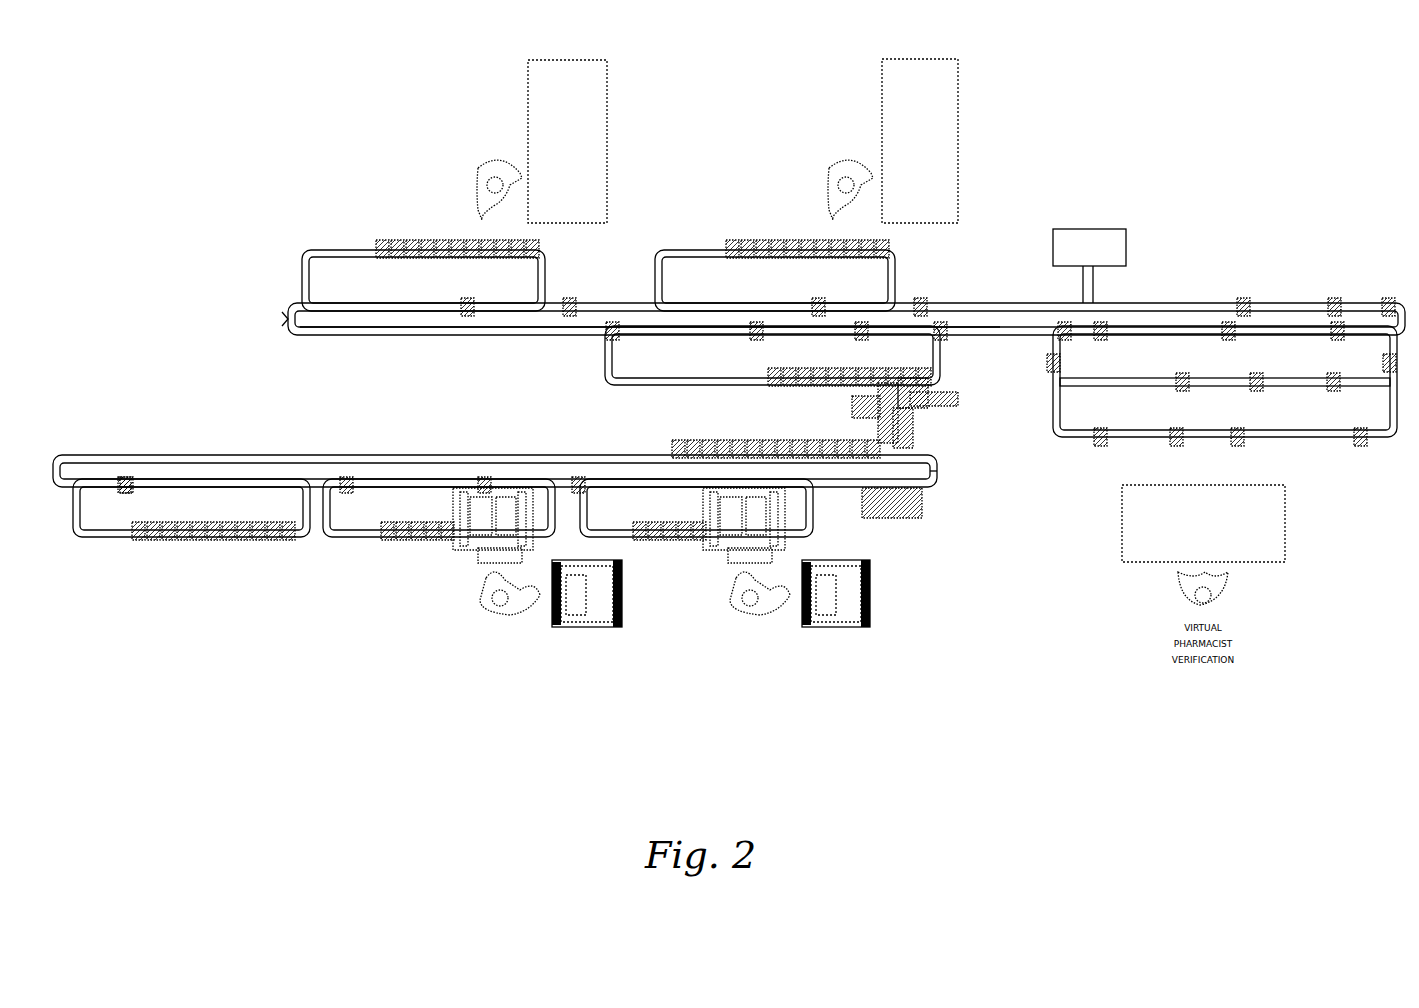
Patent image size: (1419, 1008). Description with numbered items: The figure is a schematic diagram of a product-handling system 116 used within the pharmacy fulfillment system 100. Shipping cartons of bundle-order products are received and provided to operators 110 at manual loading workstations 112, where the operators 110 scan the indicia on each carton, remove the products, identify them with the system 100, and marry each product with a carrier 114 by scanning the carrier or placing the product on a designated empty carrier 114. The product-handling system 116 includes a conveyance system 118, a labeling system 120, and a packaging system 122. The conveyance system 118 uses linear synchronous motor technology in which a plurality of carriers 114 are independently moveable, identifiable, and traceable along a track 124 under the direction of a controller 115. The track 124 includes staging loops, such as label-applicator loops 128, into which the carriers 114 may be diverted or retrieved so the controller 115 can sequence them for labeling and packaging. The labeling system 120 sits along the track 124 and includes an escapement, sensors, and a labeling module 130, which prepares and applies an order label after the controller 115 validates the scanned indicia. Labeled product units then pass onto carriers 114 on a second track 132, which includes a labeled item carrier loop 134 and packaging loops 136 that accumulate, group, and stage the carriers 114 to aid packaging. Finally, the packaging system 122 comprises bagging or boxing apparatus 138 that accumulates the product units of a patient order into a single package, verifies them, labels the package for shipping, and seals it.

The system 100 is at (268, 112).
The operators 110 is at (476, 194).
The manual loading workstations 112 is at (604, 122).
The carrier 114 is at (568, 292).
The controller 115 is at (1106, 230).
The product-handling system 116 is at (196, 266).
The conveyance system 118 is at (290, 327).
The labeling system 120 is at (948, 404).
The packaging system 122 is at (908, 550).
The track 124 is at (405, 332).
The label-applicator loops 128 is at (612, 376).
The labeling module 130 is at (856, 411).
The second track 132 is at (938, 478).
The labeled item carrier loop 134 is at (258, 455).
The packaging loops 136 is at (345, 537).
The bagging or boxing apparatus 138 is at (733, 548).